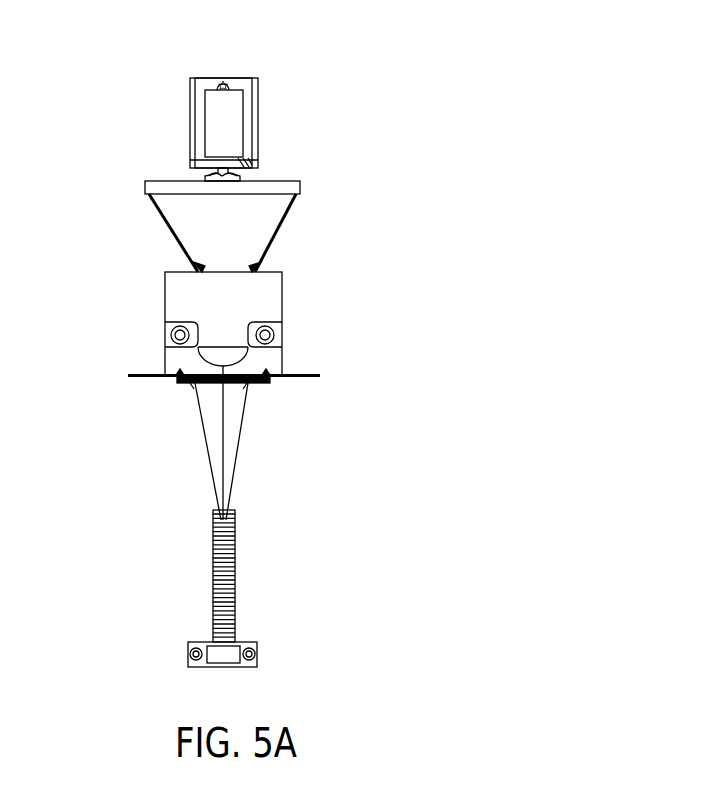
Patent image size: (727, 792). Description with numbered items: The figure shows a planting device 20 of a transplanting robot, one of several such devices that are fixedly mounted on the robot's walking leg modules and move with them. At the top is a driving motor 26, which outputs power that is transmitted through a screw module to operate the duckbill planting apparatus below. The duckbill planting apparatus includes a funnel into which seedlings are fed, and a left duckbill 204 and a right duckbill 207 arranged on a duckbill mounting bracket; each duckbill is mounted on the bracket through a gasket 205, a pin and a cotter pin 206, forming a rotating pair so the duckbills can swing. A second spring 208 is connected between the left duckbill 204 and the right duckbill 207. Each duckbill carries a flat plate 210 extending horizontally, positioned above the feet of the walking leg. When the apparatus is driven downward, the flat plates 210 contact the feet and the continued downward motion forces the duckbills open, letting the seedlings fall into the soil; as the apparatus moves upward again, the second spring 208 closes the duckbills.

The planting device 20 is at (238, 42).
The driving motor 26 is at (223, 120).
The left duckbill 204 is at (178, 360).
The gasket 205 is at (258, 336).
The cotter pin 206 is at (258, 350).
The right duckbill 207 is at (232, 408).
The second spring 208 is at (207, 386).
The flat plate 210 is at (143, 377).